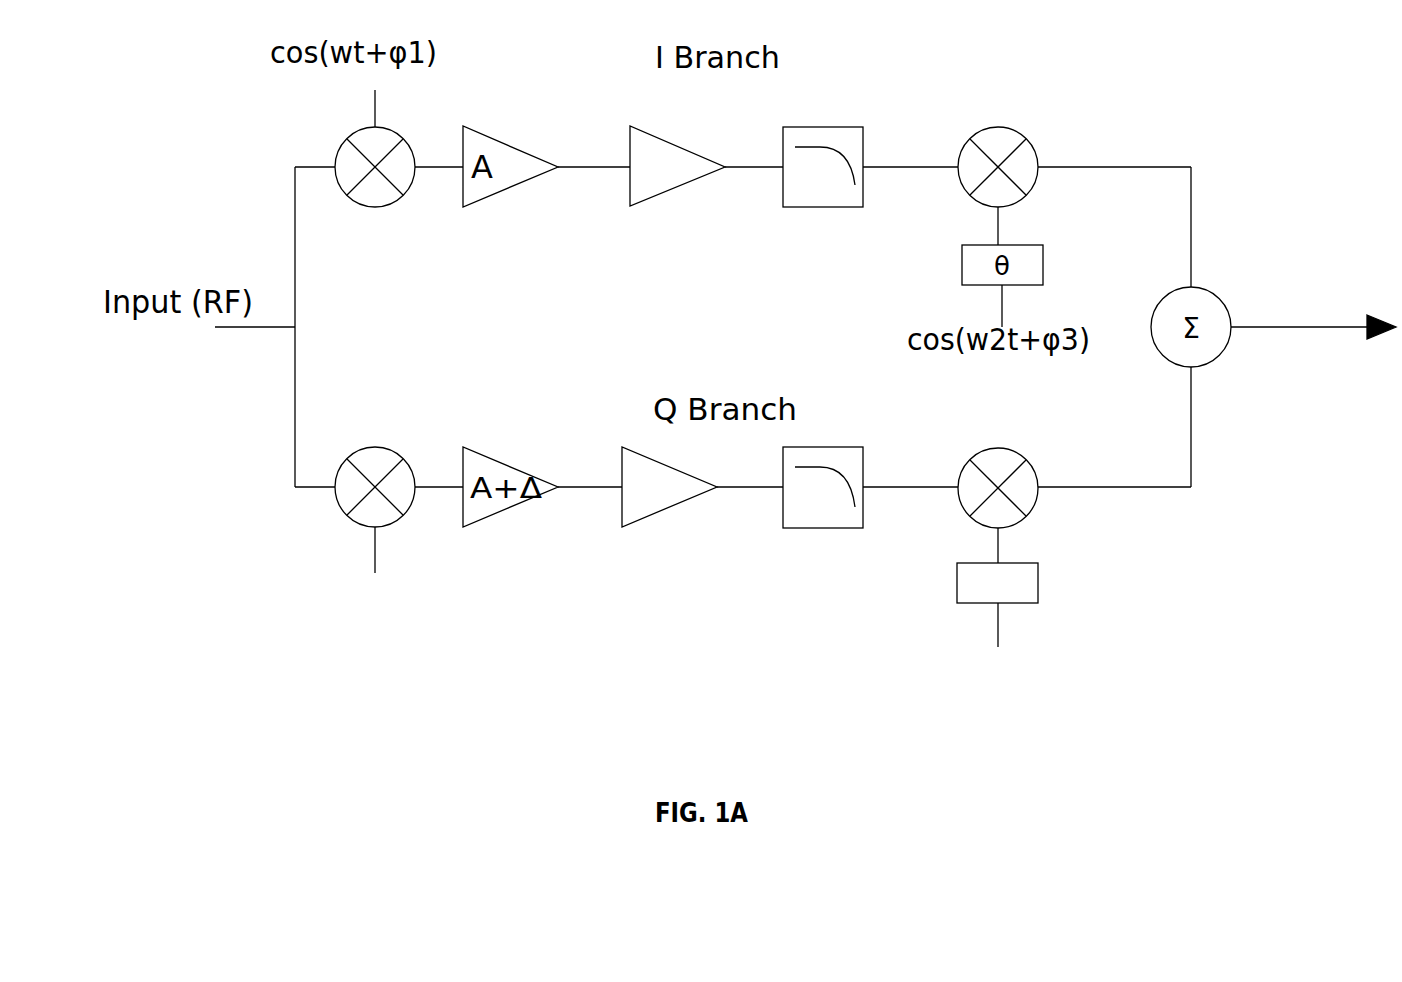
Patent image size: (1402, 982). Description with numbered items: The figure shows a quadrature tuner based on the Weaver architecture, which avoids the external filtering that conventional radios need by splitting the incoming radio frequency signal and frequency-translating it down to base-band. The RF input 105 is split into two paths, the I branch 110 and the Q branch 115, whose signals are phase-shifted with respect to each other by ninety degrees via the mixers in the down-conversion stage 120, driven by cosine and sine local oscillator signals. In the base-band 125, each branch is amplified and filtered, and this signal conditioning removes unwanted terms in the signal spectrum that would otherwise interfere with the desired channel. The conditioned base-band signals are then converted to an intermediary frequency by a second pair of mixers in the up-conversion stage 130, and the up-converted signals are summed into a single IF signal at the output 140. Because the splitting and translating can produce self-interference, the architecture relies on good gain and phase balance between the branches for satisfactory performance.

The RF input 105 is at (253, 328).
The I branch 110 is at (250, 162).
The Q branch 115 is at (242, 483).
The down-conversion stage 120 is at (400, 675).
The base-band 125 is at (710, 608).
The up-conversion stage 130 is at (958, 712).
The output 140 is at (1337, 330).